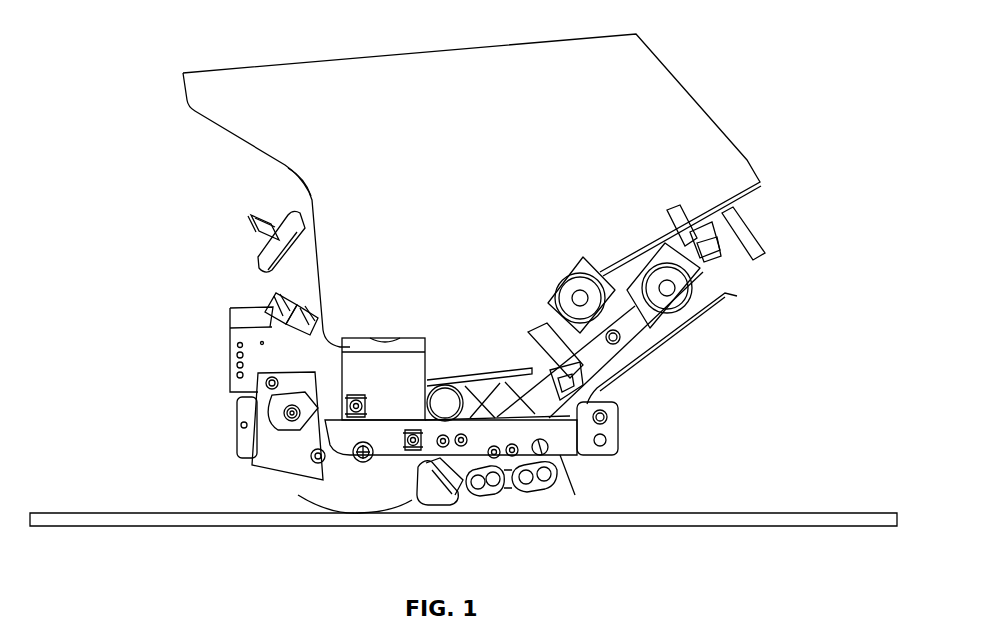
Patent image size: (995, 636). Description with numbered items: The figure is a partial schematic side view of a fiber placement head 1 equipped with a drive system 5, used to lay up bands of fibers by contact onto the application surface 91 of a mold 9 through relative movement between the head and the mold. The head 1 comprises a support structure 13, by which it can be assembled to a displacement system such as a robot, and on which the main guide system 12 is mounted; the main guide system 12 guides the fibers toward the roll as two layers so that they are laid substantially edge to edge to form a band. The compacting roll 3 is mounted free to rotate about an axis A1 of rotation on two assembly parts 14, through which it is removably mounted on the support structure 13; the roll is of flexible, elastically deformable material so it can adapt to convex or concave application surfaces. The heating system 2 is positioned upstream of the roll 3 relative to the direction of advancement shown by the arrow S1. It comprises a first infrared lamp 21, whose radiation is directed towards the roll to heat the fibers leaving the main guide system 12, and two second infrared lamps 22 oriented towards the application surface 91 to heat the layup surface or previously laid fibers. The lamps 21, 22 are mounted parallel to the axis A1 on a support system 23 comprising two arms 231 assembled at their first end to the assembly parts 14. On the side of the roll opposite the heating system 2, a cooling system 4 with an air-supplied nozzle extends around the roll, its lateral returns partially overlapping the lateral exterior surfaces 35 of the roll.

The fiber placement head 1 is at (692, 103).
The support structure 13 is at (409, 57).
The main guide system 12 is at (632, 343).
The drive system 5 is at (232, 384).
The assembly parts 14 is at (333, 443).
The cooling system 4 is at (268, 455).
The compacting roll 3 is at (330, 499).
The axis of rotation A1 is at (362, 455).
The lateral exterior surfaces 35 is at (376, 500).
The heating system 2 is at (594, 456).
The first infrared radiation lamp 21 is at (440, 492).
The second infrared lamps 22 is at (480, 495).
The arms 231 is at (583, 483).
The support system 23 is at (615, 431).
The arrow S1 is at (720, 498).
The mold 9 is at (690, 527).
The application surface 91 is at (764, 512).